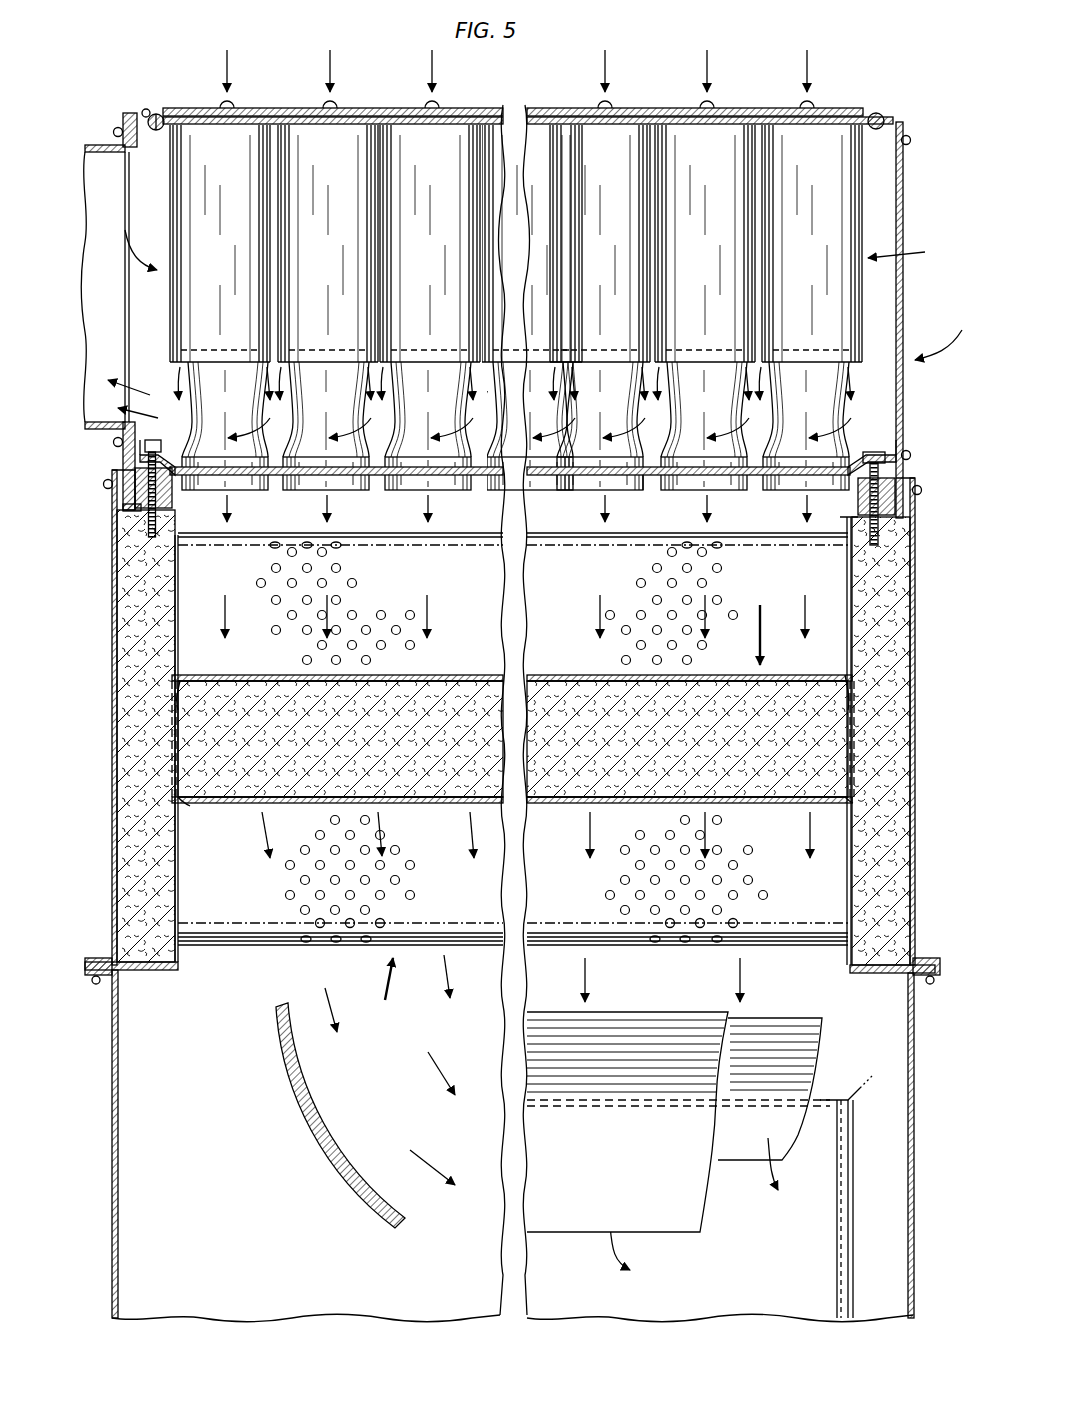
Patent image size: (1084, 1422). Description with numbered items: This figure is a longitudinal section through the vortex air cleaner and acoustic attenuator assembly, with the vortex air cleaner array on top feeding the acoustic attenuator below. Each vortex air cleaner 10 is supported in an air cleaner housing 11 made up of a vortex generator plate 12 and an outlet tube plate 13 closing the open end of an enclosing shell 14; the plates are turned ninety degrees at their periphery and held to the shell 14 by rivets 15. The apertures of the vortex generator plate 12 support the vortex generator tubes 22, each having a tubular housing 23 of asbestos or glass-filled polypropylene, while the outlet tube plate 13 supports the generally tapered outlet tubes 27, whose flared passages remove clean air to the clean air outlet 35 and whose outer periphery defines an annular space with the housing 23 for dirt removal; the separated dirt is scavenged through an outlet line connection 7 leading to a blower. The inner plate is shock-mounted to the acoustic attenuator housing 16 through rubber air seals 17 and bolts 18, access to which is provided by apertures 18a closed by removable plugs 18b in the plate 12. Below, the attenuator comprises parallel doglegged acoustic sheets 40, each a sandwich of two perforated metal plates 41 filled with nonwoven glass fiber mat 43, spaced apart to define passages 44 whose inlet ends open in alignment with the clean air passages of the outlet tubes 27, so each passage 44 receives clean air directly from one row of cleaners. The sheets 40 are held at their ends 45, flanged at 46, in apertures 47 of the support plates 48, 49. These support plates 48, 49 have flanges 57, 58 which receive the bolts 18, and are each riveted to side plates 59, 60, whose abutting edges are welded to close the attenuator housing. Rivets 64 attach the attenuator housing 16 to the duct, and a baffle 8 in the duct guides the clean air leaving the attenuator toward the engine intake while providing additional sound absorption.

The outlet line connection 7 is at (92, 306).
The baffle 8 is at (312, 1140).
The vortex air cleaner 10 is at (122, 239).
The air cleaner housing 11 is at (943, 330).
The vortex generator plate 12 is at (498, 108).
The outlet tube plate 13 is at (648, 483).
The enclosing shell 14 is at (904, 198).
The rivet 15 is at (114, 130).
The acoustic attenuator housing 16 is at (918, 858).
The rubber air seal 17 is at (174, 500).
The bolt 18 is at (140, 408).
The aperture 18a is at (162, 114).
The removable plug 18b is at (146, 108).
The vortex generator tube 22 is at (911, 253).
The tubular housing 23 is at (338, 242).
The outlet tube 27 is at (338, 419).
The clean air outlet 35 is at (408, 490).
The acoustic sheet 40 is at (571, 811).
The perforated metal plate 41 is at (432, 795).
The nonwoven glass fiber mat 43 is at (589, 749).
The passage 44 is at (482, 604).
The sheet end 45 is at (166, 740).
The flange 46 is at (170, 677).
The aperture 47 is at (185, 805).
The support plate 48 is at (180, 590).
The support plate 49 is at (846, 578).
The flange 57 is at (135, 512).
The flange 58 is at (906, 538).
The side plate 59 is at (112, 602).
The side plate 60 is at (916, 602).
The rivet 64 is at (100, 958).